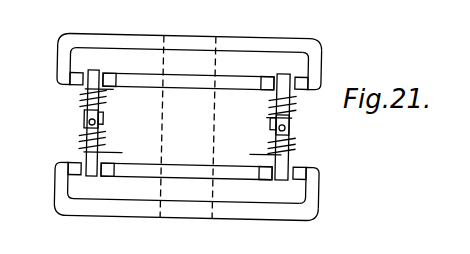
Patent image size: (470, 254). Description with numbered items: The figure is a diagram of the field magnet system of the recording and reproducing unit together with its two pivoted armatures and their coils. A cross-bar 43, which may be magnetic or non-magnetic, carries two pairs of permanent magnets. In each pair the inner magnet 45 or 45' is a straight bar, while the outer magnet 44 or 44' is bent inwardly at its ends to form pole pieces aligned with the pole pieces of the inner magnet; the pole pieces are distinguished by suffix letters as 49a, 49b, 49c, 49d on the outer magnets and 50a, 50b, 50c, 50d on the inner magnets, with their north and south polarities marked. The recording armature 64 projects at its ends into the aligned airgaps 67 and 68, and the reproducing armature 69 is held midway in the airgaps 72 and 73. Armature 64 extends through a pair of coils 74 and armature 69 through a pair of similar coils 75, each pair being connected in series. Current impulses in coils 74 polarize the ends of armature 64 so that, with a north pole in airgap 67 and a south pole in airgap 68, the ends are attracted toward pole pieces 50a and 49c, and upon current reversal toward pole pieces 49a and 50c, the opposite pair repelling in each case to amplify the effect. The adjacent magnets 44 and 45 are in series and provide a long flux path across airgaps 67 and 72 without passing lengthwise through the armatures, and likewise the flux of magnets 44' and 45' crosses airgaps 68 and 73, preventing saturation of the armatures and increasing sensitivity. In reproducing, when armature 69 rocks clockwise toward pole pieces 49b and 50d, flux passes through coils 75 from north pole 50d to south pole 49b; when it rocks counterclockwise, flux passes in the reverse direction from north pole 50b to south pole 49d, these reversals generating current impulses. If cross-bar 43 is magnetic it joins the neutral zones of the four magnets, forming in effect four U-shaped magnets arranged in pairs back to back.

The cross-bar 43 is at (218, 62).
The outer permanent magnet 44 is at (189, 46).
The outer permanent magnet 44' is at (186, 204).
The inner permanent magnet 45 is at (188, 93).
The inner permanent magnet 45' is at (186, 202).
The pole piece of magnet 44 49a is at (72, 86).
The pole piece of magnet 44 49b is at (302, 90).
The pole piece of magnet 44' 49c is at (70, 161).
The pole piece of magnet 44' 49d is at (294, 171).
The pole piece of magnet 45 50a is at (112, 72).
The pole piece of magnet 45 50b is at (257, 88).
The pole piece of magnet 45' 50c is at (110, 176).
The pole piece of magnet 45' 50d is at (268, 180).
The armature bar 64 is at (92, 72).
The airgap 67 is at (100, 72).
The airgap 68 is at (100, 177).
The armature bar 69 is at (283, 75).
The airgap 72 is at (312, 64).
The airgap 73 is at (318, 199).
The coils 74 is at (85, 106).
The coils 75 is at (288, 135).